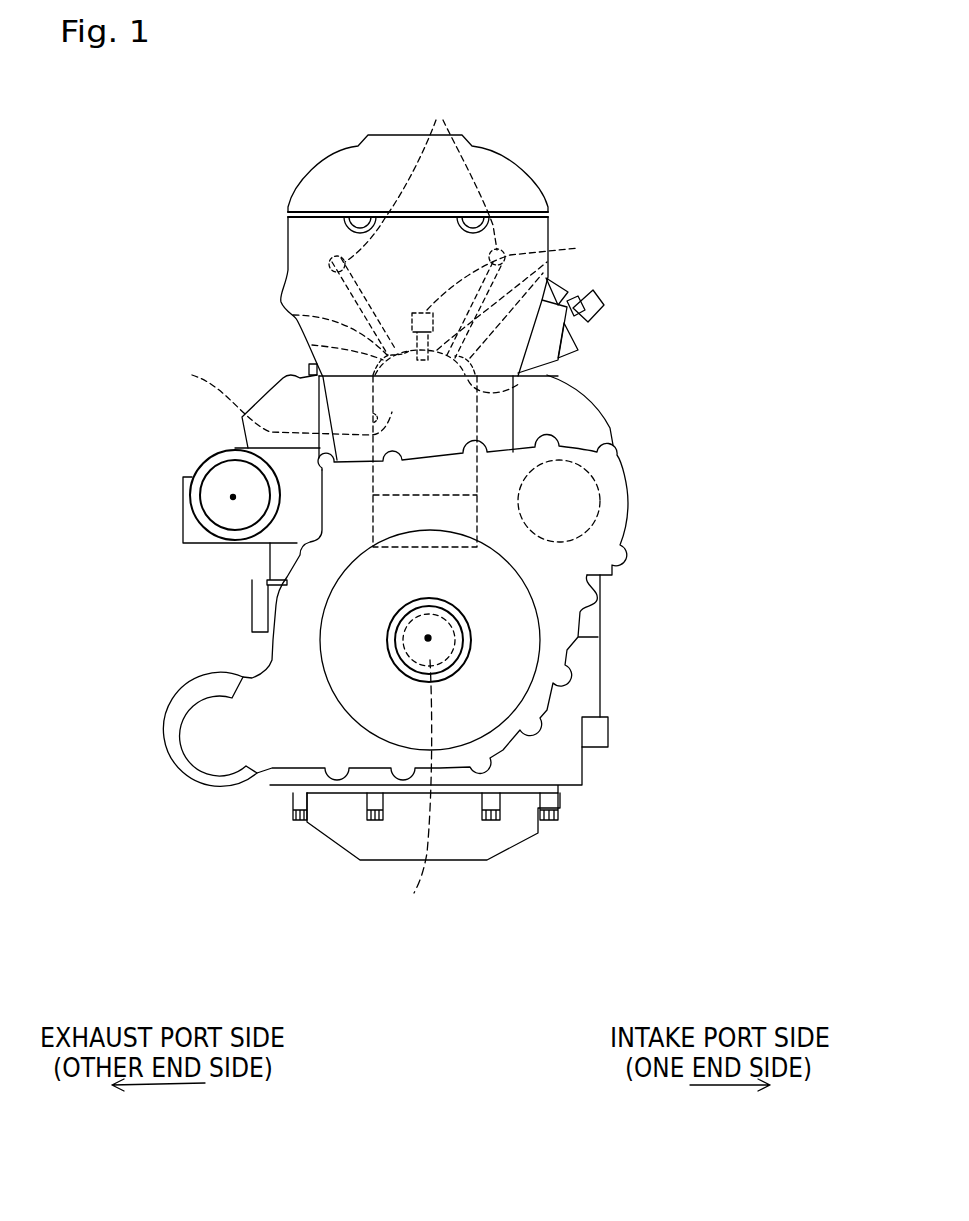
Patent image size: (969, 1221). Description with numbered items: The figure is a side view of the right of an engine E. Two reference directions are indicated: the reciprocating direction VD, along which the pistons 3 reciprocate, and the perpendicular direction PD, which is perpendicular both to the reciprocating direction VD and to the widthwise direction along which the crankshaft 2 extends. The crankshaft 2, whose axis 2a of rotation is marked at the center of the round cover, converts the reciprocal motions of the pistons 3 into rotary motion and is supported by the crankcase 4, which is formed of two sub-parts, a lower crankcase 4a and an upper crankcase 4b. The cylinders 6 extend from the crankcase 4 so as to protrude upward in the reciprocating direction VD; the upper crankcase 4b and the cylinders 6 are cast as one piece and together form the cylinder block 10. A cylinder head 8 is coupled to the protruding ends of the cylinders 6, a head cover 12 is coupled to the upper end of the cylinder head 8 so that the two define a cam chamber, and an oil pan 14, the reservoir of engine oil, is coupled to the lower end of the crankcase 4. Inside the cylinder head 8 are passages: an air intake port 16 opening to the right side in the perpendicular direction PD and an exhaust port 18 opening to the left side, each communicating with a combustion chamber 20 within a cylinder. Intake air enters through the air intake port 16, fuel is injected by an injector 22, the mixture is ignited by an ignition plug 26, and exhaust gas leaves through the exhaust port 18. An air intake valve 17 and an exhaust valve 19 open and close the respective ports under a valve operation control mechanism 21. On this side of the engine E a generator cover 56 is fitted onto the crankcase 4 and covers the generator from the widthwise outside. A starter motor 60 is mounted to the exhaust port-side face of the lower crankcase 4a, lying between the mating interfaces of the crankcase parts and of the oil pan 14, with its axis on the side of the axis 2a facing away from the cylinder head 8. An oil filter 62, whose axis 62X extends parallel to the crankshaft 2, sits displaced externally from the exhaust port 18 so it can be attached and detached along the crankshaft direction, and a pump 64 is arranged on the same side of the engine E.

The engine E is at (622, 127).
The crankshaft 2 is at (429, 759).
The axis of rotation of the crankshaft 2a is at (430, 640).
The pistons 3 is at (614, 431).
The crankcase 4 is at (683, 608).
The lower crankcase 4a is at (600, 668).
The upper crankcase 4b is at (600, 620).
The cylinders 6 is at (500, 417).
The cylinder head 8 is at (533, 237).
The cylinder block 10 is at (633, 594).
The head cover 12 is at (540, 184).
The oil pan 14 is at (518, 837).
The air intake port 16 is at (548, 292).
The air intake valve 17 is at (556, 375).
The exhaust port 18 is at (293, 323).
The exhaust valve 19 is at (309, 368).
The combustion chamber 20 is at (276, 402).
The valve operation control mechanism 21 is at (417, 232).
The injector 22 is at (593, 318).
The ignition plug 26 is at (514, 313).
The generator cover 56 is at (381, 714).
The starter motor 60 is at (222, 762).
The oil filter 62 is at (225, 476).
The axis of the oil filter 62X is at (233, 497).
The pump 64 is at (600, 480).
The reciprocating direction VD is at (180, 925).
The perpendicular direction PD is at (437, 968).